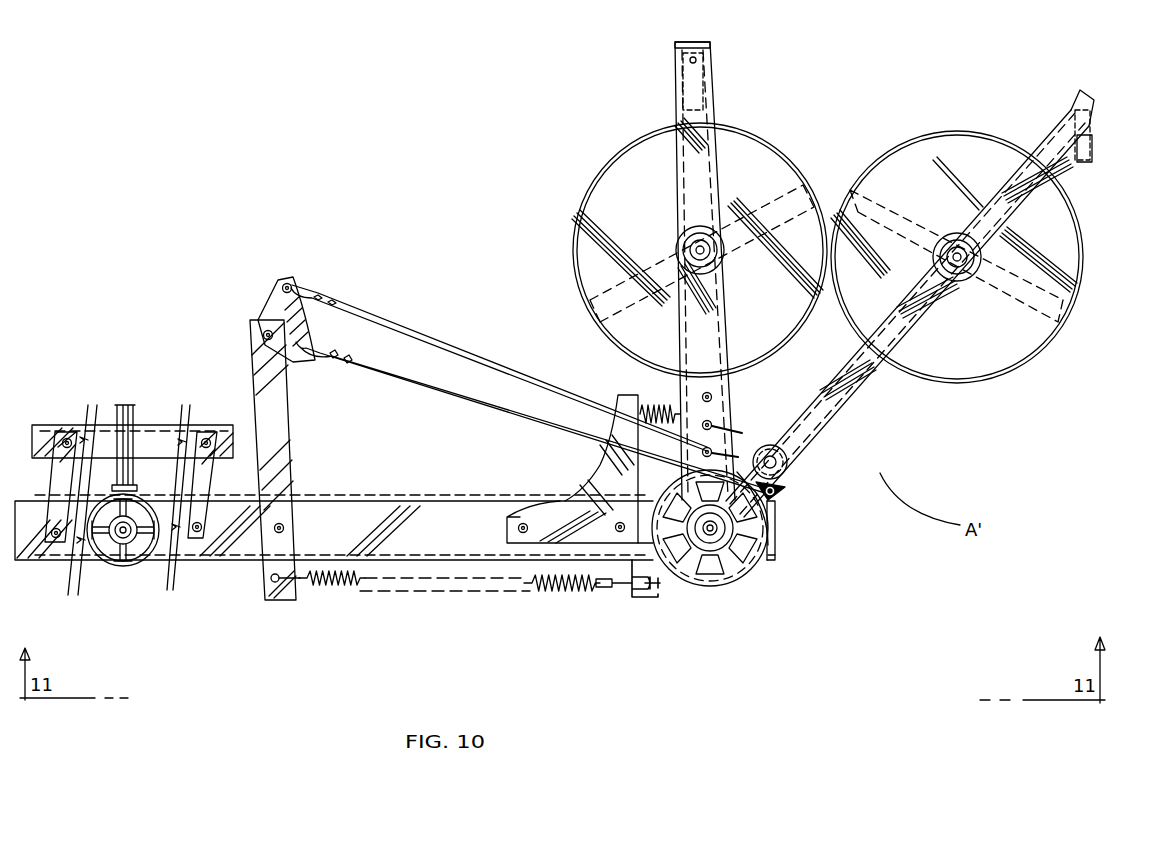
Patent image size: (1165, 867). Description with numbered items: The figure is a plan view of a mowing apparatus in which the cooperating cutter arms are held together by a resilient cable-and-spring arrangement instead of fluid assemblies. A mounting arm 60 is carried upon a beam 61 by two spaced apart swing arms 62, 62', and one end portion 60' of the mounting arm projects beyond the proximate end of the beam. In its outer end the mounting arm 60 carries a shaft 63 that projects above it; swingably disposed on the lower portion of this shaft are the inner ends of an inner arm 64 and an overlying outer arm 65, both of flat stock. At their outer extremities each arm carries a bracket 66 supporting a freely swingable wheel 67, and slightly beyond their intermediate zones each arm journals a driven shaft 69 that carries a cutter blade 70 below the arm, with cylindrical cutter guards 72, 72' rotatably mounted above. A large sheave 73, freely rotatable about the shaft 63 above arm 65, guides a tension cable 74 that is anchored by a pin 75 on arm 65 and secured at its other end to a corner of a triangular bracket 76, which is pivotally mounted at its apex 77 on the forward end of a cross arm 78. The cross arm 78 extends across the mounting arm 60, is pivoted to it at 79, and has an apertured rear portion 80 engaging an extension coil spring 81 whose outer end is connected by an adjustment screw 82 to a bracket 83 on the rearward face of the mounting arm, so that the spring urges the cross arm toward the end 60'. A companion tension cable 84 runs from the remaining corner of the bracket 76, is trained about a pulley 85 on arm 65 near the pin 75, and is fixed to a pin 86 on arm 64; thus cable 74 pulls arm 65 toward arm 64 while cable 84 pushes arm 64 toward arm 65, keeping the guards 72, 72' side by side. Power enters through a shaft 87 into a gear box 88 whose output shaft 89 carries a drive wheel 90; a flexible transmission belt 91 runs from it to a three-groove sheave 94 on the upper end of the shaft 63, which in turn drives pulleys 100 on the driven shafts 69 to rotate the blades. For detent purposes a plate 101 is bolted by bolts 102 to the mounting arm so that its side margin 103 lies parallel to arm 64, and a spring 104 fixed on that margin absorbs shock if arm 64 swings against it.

The mounting arm 60 is at (395, 575).
The end portion of mounting arm 60' is at (807, 549).
The beam 61 is at (40, 425).
The swing arm 62 is at (205, 449).
The swing arm 62' is at (58, 441).
The shaft 63 is at (718, 540).
The inner arm 64 is at (693, 315).
The outer arm 65 is at (860, 383).
The bracket 66 is at (712, 45).
The wheel 67 is at (700, 100).
The driven shaft 69 is at (686, 250).
The cutter blade 70 is at (588, 308).
The cutter guard 72 is at (672, 250).
The cutter guard 72' is at (983, 257).
The sheave 73 is at (747, 525).
The tension cable 74 is at (435, 390).
The pin 75 is at (776, 496).
The triangular bracket 76 is at (282, 302).
The pivot 77 is at (262, 331).
The cross arm 78 is at (285, 420).
The pivot 79 is at (286, 525).
The extended rear portion 80 is at (278, 602).
The extension coil spring 81 is at (335, 588).
The adjustment screw 82 is at (612, 590).
The bracket 83 is at (642, 592).
The companion tension cable 84 is at (358, 312).
The pulley 85 is at (790, 460).
The pin 86 is at (713, 428).
The shaft 87 is at (122, 405).
The gear box 88 is at (78, 580).
The output shaft 89 is at (105, 565).
The drive wheel 90 is at (122, 568).
The flexible transmission belt 91 is at (150, 565).
The three-groove sheave 94 is at (712, 551).
The pulley 100 is at (690, 245).
The plate 101 is at (530, 543).
The bolt 102 is at (620, 532).
The side margin 103 is at (613, 447).
The spring 104 is at (648, 405).